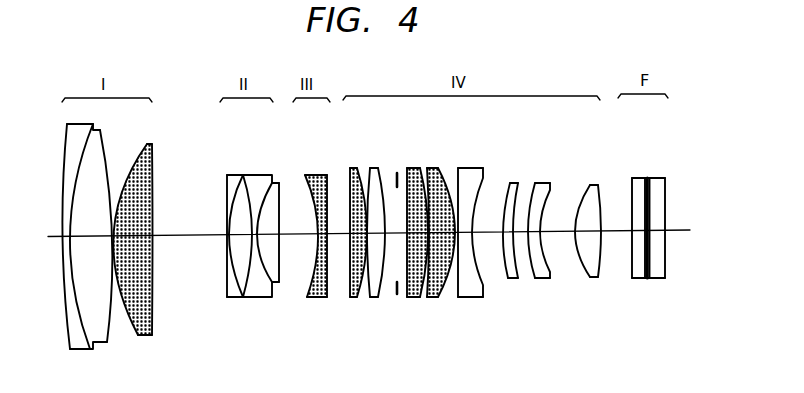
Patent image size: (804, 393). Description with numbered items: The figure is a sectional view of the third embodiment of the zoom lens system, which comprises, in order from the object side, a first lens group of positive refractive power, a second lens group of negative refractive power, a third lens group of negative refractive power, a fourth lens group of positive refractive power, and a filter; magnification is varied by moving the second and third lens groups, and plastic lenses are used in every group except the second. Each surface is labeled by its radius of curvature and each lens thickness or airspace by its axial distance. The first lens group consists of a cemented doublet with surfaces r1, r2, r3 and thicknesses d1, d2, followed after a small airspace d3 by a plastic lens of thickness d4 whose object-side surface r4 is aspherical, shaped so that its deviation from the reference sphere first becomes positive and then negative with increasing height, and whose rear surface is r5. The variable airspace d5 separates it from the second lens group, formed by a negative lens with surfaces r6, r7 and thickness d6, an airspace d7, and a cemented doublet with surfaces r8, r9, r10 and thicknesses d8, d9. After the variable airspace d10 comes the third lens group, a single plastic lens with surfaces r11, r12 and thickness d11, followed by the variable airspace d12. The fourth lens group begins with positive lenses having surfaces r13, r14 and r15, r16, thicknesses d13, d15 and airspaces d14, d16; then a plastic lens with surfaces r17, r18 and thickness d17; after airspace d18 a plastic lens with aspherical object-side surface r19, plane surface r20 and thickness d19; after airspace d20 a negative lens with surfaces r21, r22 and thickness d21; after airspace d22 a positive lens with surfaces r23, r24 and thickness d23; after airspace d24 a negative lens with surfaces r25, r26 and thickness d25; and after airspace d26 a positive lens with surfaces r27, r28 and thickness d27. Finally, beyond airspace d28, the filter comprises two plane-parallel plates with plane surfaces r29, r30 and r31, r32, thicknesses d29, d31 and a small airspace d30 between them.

The radius of curvature of the first lens surface r1 is at (68, 349).
The radius of curvature of the second lens surface r2 is at (90, 349).
The radius of curvature of the third lens surface r3 is at (107, 342).
The radius of curvature of the fourth lens surface r4 is at (138, 335).
The radius of curvature of the fifth lens surface r5 is at (152, 335).
The radius of curvature of the sixth lens surface r6 is at (228, 297).
The radius of curvature of the seventh lens surface r7 is at (243, 297).
The radius of curvature of the eighth lens surface r8 is at (244, 297).
The radius of curvature of the ninth lens surface r9 is at (272, 282).
The radius of curvature of the tenth lens surface r10 is at (279, 282).
The radius of curvature of the eleventh lens surface r11 is at (307, 297).
The radius of curvature of the twelfth lens surface r12 is at (327, 297).
The radius of curvature of the thirteenth lens surface r13 is at (350, 297).
The radius of curvature of the fourteenth lens surface r14 is at (357, 297).
The radius of curvature of the fifteenth lens surface r15 is at (370, 297).
The radius of curvature of the sixteenth lens surface r16 is at (378, 297).
The radius of curvature of the seventeenth lens surface r17 is at (407, 297).
The radius of curvature of the eighteenth lens surface r18 is at (420, 297).
The radius of curvature of the nineteenth lens surface r19 is at (427, 297).
The radius of curvature of the twentieth lens surface r20 is at (438, 297).
The radius of curvature of the twenty-first lens surface r21 is at (458, 297).
The radius of curvature of the twenty-second lens surface r22 is at (483, 297).
The radius of curvature of the twenty-third lens surface r23 is at (508, 278).
The radius of curvature of the twenty-fourth lens surface r24 is at (518, 278).
The radius of curvature of the twenty-fifth lens surface r25 is at (535, 278).
The radius of curvature of the twenty-sixth lens surface r26 is at (550, 278).
The radius of curvature of the twenty-seventh lens surface r27 is at (590, 277).
The radius of curvature of the twenty-eighth lens surface r28 is at (598, 277).
The radius of curvature of the twenty-ninth surface r29 is at (632, 278).
The radius of curvature of the thirtieth surface r30 is at (645, 278).
The radius of curvature of the thirty-first surface r31 is at (650, 278).
The radius of curvature of the thirty-second surface r32 is at (665, 278).
The thickness of the first lens d1 is at (67, 235).
The thickness of the second lens d2 is at (90, 235).
The airspace between the second and third lenses d3 is at (113, 232).
The thickness of the third lens d4 is at (135, 235).
The variable airspace between the first and second lens groups d5 is at (165, 235).
The thickness of the fourth lens d6 is at (228, 234).
The airspace within the second lens group d7 is at (240, 234).
The thickness of the fifth lens d8 is at (254, 234).
The thickness of the sixth lens d9 is at (267, 234).
The variable airspace between the second and third lens groups d10 is at (292, 234).
The thickness of the seventh lens d11 is at (322, 233).
The variable airspace between the third and fourth lens groups d12 is at (338, 233).
The thickness of the eighth lens d13 is at (358, 233).
The airspace within the fourth lens group d14 is at (367, 233).
The thickness of the ninth lens d15 is at (376, 233).
The airspace within the fourth lens group d16 is at (396, 233).
The thickness of the tenth lens d17 is at (417, 233).
The airspace within the fourth lens group d18 is at (428, 233).
The thickness of the eleventh lens d19 is at (441, 233).
The airspace within the fourth lens group d20 is at (457, 233).
The thickness of the twelfth lens d21 is at (465, 233).
The airspace within the fourth lens group d22 is at (493, 232).
The thickness of the thirteenth lens d23 is at (508, 232).
The airspace within the fourth lens group d24 is at (521, 232).
The thickness of the fourteenth lens d25 is at (534, 232).
The airspace within the fourth lens group d26 is at (558, 232).
The thickness of the fifteenth lens d27 is at (588, 231).
The airspace between the last lens and the filter d28 is at (616, 231).
The thickness of the first filter plate d29 is at (638, 231).
The airspace between the filter plates d30 is at (647, 231).
The thickness of the second filter plate d31 is at (657, 231).